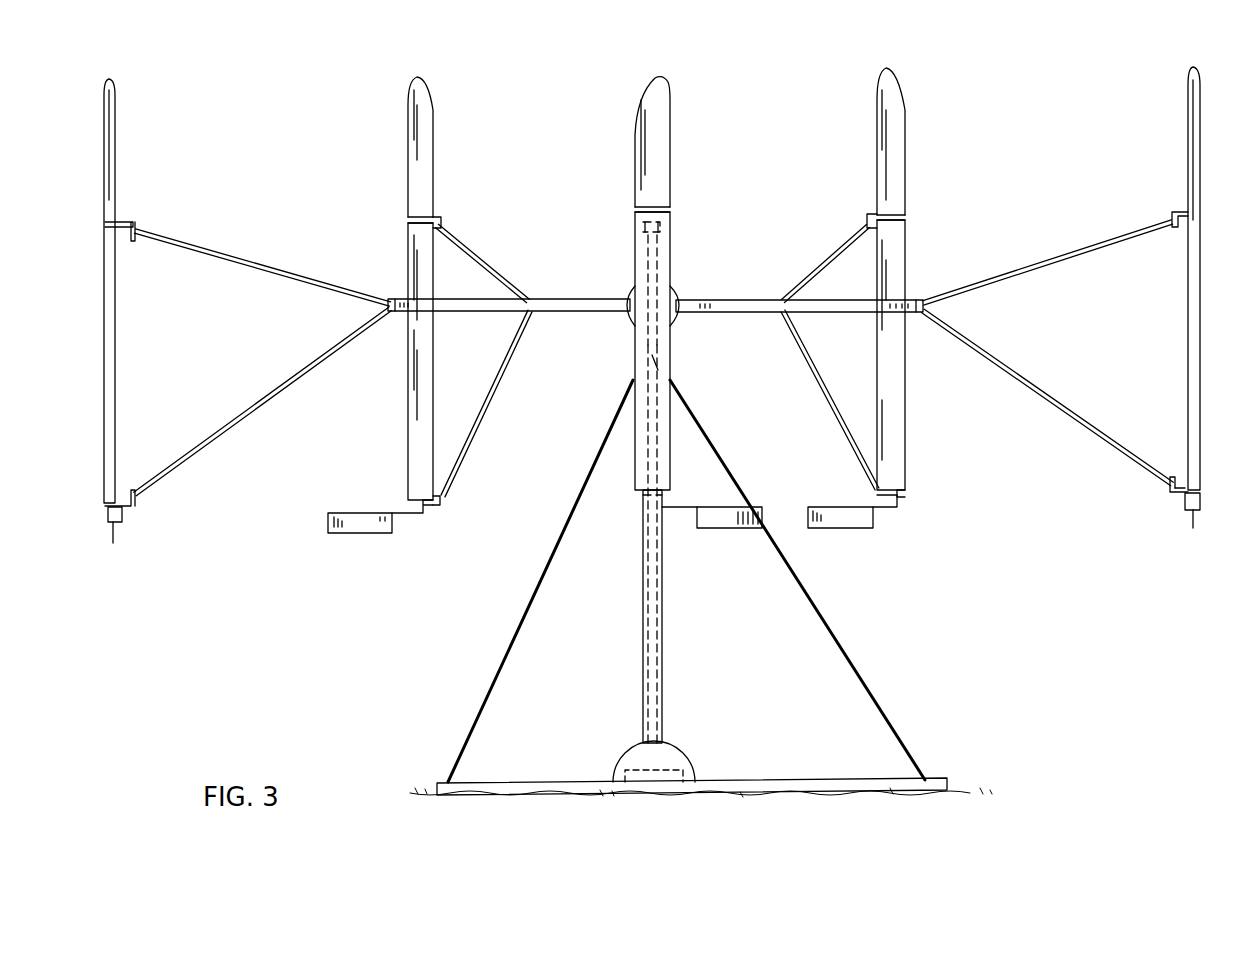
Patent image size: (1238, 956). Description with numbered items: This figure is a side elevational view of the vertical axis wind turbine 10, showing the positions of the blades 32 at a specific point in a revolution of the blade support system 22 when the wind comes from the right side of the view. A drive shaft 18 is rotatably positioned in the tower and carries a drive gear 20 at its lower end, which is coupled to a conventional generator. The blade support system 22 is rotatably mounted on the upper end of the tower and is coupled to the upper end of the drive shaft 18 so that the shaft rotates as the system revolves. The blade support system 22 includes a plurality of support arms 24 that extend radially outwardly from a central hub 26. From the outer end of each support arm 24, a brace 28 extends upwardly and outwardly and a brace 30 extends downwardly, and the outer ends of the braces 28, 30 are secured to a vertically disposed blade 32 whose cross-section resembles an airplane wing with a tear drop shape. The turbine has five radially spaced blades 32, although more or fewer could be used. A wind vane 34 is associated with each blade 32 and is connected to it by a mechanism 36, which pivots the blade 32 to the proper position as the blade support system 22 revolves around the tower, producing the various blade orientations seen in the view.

The vertical axis wind turbine 10 is at (783, 135).
The drive shaft 18 is at (658, 610).
The drive gear 20 is at (693, 758).
The blade support system 22 is at (573, 280).
The support arm 24 is at (565, 312).
The central hub 26 is at (678, 300).
The brace 28 is at (213, 247).
The brace 30 is at (262, 398).
The blade 32 is at (128, 185).
The wind vane 34 is at (118, 535).
The mechanism 36 is at (433, 508).